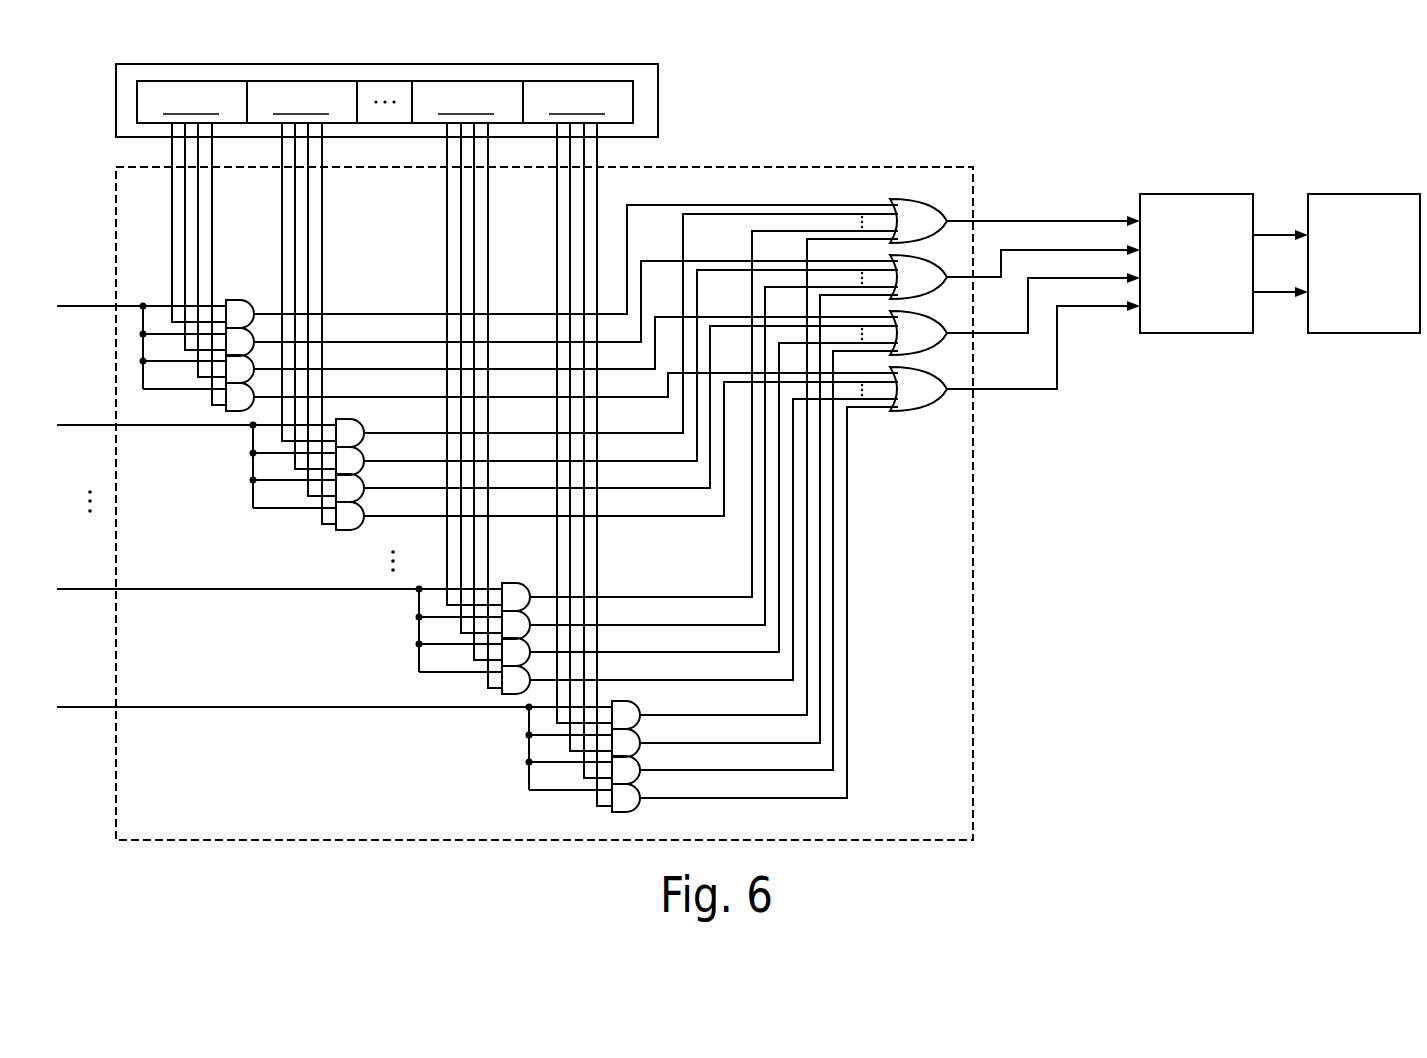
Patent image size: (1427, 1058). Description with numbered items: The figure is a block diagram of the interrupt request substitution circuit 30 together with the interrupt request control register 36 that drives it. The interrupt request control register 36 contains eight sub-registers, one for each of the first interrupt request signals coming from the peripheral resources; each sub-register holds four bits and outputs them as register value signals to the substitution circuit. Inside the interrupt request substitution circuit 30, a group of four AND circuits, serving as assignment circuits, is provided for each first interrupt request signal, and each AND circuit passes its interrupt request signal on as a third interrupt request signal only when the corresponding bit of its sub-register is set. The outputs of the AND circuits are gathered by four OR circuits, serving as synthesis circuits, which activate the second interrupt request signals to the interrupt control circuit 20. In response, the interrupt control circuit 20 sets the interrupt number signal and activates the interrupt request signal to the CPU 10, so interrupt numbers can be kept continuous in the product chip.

The interrupt request control register 36 is at (658, 64).
The interrupt request substitution circuit 30 is at (983, 149).
The interrupt control circuit 20 is at (1205, 176).
The CPU 10 is at (1360, 194).